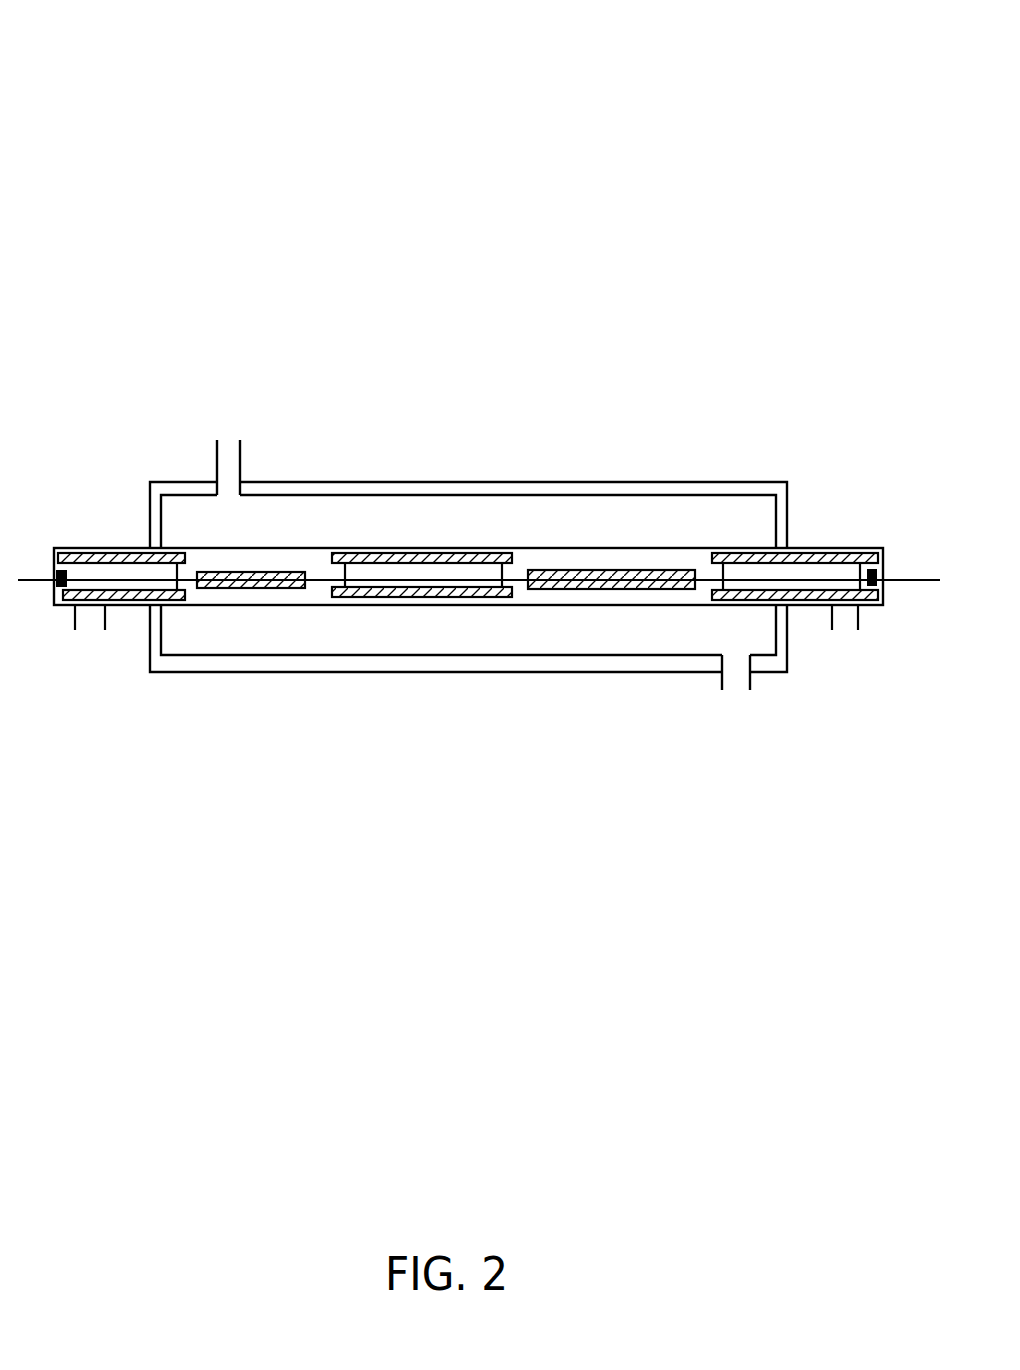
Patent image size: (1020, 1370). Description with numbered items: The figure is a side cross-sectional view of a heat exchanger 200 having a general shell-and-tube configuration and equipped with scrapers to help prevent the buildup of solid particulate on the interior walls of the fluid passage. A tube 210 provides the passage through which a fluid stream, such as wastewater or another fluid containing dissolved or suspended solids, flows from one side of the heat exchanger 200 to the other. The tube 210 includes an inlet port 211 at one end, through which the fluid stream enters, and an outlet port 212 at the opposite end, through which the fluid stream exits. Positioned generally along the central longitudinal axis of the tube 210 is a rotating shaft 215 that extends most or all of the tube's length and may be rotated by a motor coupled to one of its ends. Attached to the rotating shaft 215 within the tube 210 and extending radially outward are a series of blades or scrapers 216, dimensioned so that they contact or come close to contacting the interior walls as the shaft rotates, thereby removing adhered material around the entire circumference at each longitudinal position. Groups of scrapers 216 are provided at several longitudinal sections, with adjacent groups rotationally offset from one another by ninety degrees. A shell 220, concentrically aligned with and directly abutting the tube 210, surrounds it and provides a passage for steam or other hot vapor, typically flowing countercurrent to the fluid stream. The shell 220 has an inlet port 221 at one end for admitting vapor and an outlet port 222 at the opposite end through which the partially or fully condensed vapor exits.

The heat exchanger 200 is at (136, 52).
The tube 210 is at (270, 605).
The inlet port 211 is at (93, 620).
The outlet port 212 is at (843, 622).
The rotating shaft 215 is at (907, 581).
The scrapers 216 is at (413, 563).
The shell 220 is at (612, 482).
The inlet port 221 is at (737, 680).
The outlet port 222 is at (229, 453).